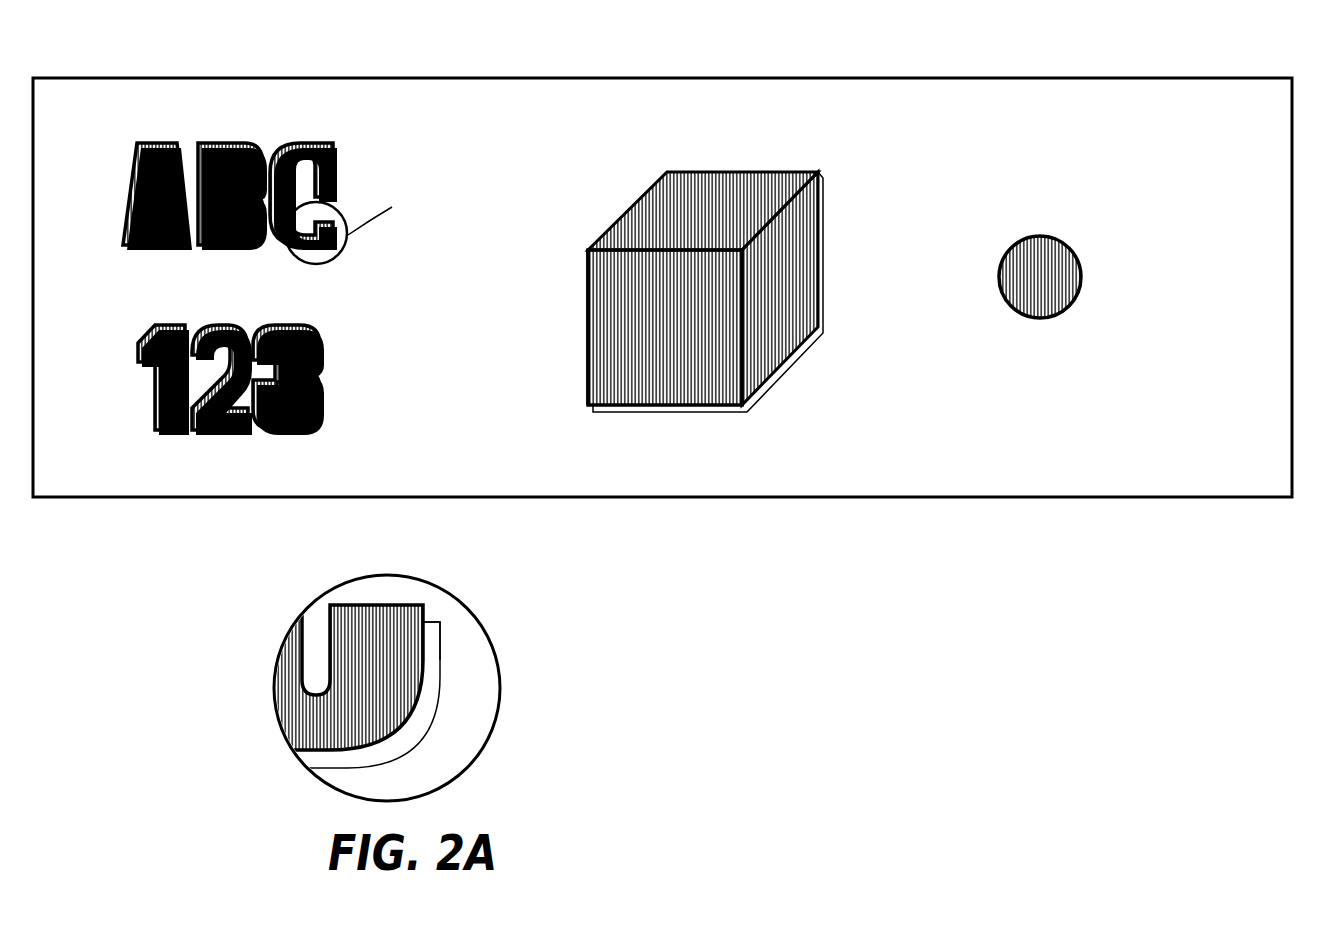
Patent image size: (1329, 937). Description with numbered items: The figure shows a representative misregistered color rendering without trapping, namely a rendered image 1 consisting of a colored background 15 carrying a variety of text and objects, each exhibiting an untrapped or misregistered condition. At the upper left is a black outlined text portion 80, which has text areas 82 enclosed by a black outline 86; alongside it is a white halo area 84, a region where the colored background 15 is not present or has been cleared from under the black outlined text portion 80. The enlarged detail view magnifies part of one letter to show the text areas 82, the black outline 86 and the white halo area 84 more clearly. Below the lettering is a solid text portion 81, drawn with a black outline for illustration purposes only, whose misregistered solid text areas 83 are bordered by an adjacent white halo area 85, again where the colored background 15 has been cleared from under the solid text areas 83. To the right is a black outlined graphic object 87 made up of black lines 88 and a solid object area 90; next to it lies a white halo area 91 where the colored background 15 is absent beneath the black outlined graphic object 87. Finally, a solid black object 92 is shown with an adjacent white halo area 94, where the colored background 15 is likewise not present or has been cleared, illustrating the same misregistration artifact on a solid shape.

In FIG. 2, the rendered image 1 is at (831, 62).
In FIG. 2, the colored background 15 is at (575, 107).
In FIG. 2, the black outlined text portion 80 is at (112, 120).
In FIG. 2, the solid text portion 81 is at (123, 305).
In FIG. 2, the solid text areas 83 is at (293, 438).
In FIG. 2, the white halo area 85 is at (307, 434).
In FIG. 2, the black outlined graphic object 87 is at (791, 161).
In FIG. 2, the black lines 88 is at (588, 277).
In FIG. 2, the solid object area 90 is at (617, 337).
In FIG. 2, the white halo area 91 is at (787, 372).
In FIG. 2, the solid black object 92 is at (1030, 278).
In FIG. 2, the white halo area 94 is at (1075, 308).
In FIG. 2A, the text areas 82 is at (308, 722).
In FIG. 2A, the white halo area 84 is at (418, 713).
In FIG. 2A, the black outline 86 is at (428, 648).